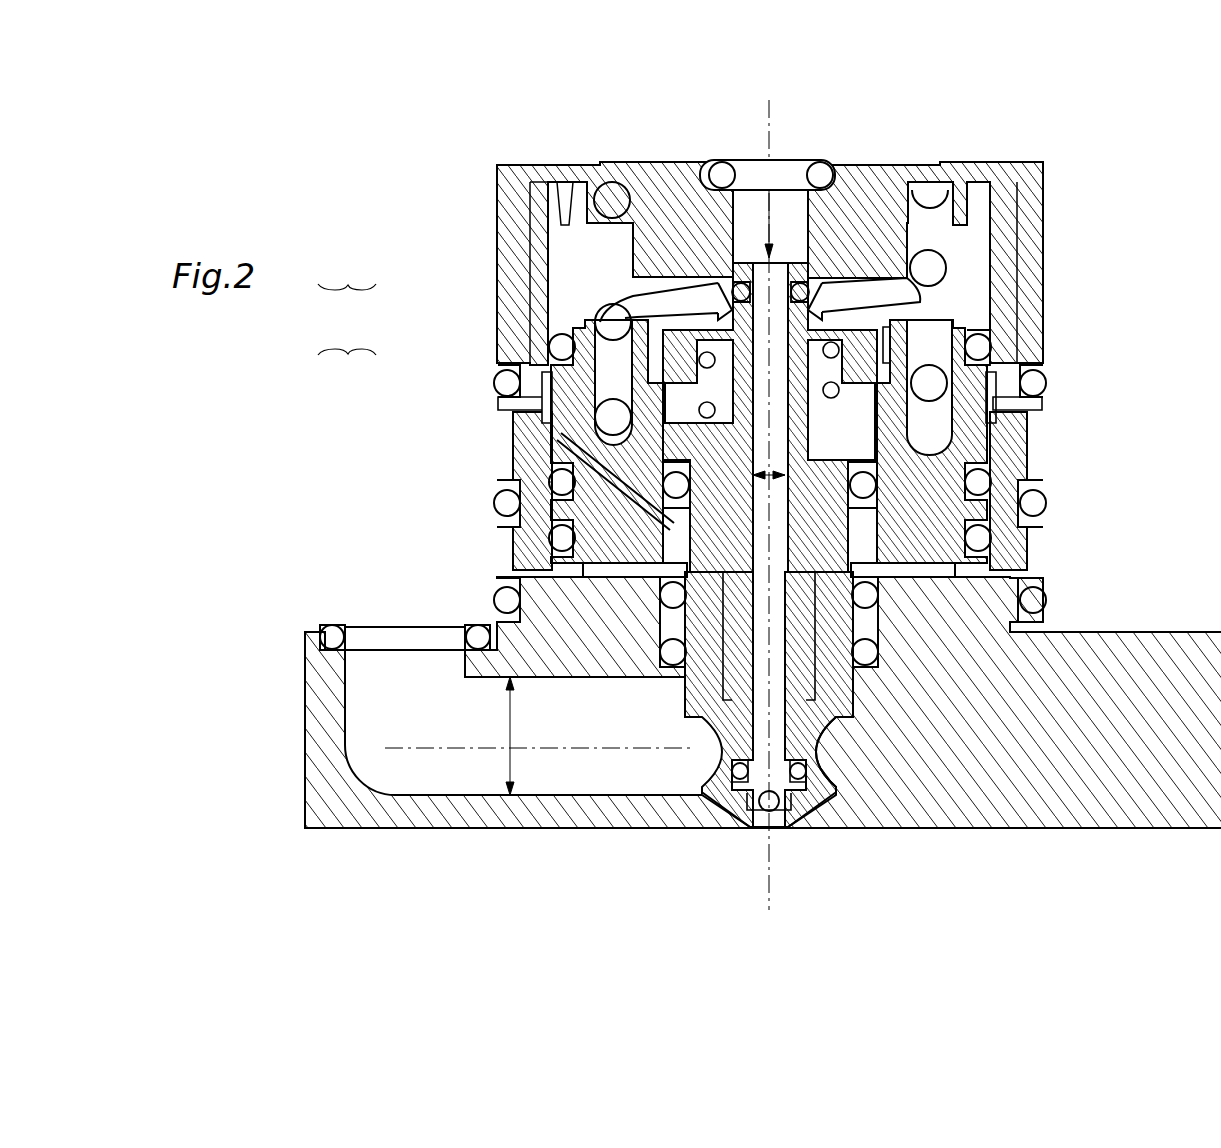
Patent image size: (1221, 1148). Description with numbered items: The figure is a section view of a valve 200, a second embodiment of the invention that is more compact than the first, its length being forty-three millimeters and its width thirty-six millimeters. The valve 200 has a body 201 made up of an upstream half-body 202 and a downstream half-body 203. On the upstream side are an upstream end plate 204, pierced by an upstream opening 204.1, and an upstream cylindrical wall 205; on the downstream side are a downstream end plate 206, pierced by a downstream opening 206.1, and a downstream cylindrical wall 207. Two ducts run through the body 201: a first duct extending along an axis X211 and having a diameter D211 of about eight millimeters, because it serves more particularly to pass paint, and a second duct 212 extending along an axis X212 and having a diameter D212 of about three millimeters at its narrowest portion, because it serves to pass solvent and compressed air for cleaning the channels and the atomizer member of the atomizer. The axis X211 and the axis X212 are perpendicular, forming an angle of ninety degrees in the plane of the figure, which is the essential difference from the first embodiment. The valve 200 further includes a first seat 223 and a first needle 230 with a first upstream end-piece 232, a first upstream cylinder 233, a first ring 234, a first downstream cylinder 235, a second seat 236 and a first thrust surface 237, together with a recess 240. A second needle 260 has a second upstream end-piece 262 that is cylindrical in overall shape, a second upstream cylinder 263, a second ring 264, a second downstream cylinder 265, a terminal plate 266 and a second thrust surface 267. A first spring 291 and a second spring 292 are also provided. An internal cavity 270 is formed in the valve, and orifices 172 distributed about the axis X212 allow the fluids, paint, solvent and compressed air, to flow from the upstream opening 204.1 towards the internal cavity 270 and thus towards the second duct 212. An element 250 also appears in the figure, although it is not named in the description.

The valve 200 is at (1080, 226).
The body 201 is at (318, 348).
The upstream half-body 202 is at (331, 330).
The downstream half-body 203 is at (331, 306).
The upstream end plate 204 is at (300, 722).
The upstream opening 204.1 is at (755, 838).
The upstream cylindrical wall 205 is at (497, 400).
The downstream end plate 206 is at (605, 165).
The downstream opening 206.1 is at (773, 134).
The downstream cylindrical wall 207 is at (515, 226).
The second duct 212 is at (770, 381).
The first seat 223 is at (640, 826).
The first needle 230 is at (1037, 878).
The first upstream end-piece 232 is at (930, 600).
The first upstream cylinder 233 is at (945, 580).
The first ring 234 is at (960, 560).
The first downstream cylinder 235 is at (978, 560).
The second seat 236 is at (900, 640).
The first thrust surface 237 is at (1032, 624).
The recess 240 is at (847, 439).
The channel 250 is at (612, 441).
The second needle 260 is at (366, 470).
The second upstream end-piece 262 is at (522, 578).
The second upstream cylinder 263 is at (700, 515).
The second ring 264 is at (552, 480).
The second downstream cylinder 265 is at (600, 460).
The terminal plate 266 is at (522, 612).
The second thrust surface 267 is at (992, 442).
The internal cavity 270 is at (748, 178).
The first spring 291 is at (930, 262).
The second spring 292 is at (837, 323).
The orifices 172 is at (769, 790).
The diameter of the first duct D211 is at (498, 736).
The diameter of the second duct D212 is at (770, 463).
The axis of the first duct X211 is at (533, 734).
The axis of the second duct X212 is at (793, 508).